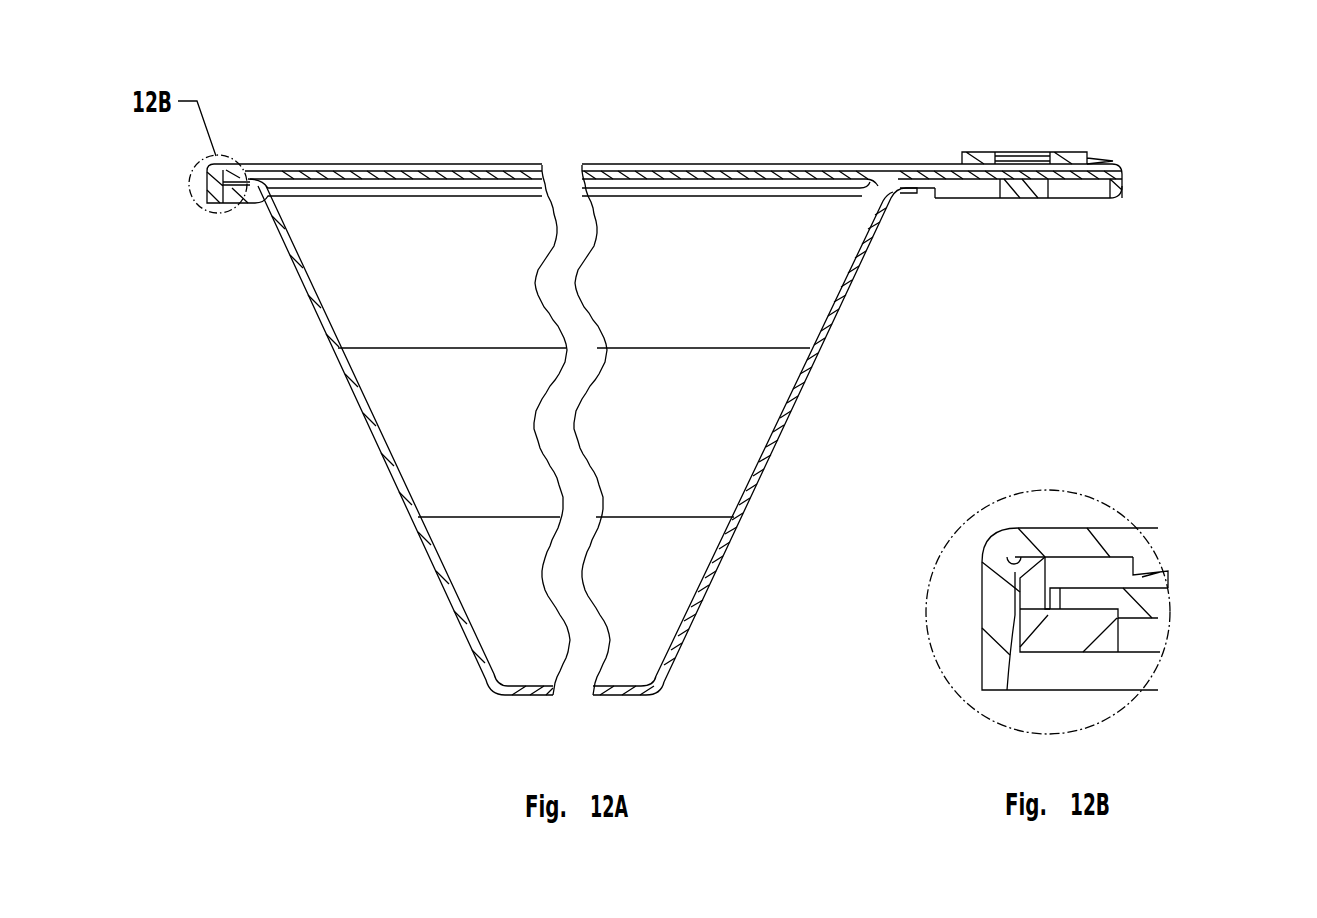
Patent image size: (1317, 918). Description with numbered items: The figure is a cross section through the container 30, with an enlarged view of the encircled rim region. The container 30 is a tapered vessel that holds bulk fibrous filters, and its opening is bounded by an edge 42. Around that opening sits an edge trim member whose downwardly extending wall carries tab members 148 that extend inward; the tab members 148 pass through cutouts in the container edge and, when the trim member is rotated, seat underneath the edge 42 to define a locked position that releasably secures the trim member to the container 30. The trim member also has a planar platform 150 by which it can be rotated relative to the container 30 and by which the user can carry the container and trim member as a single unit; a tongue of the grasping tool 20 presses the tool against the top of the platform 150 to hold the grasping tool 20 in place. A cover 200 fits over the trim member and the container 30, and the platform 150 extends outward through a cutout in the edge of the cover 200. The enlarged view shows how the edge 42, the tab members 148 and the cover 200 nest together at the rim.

In FIG. 12A, the grasping tool 20 is at (1075, 133).
In FIG. 12A, the container 30 is at (753, 498).
In FIG. 12B, the edge 42 is at (1100, 598).
In FIG. 12B, the tab members 148 is at (1042, 638).
In FIG. 12A, the planar platform 150 is at (1123, 184).
In FIG. 12B, the cover 200 is at (982, 607).